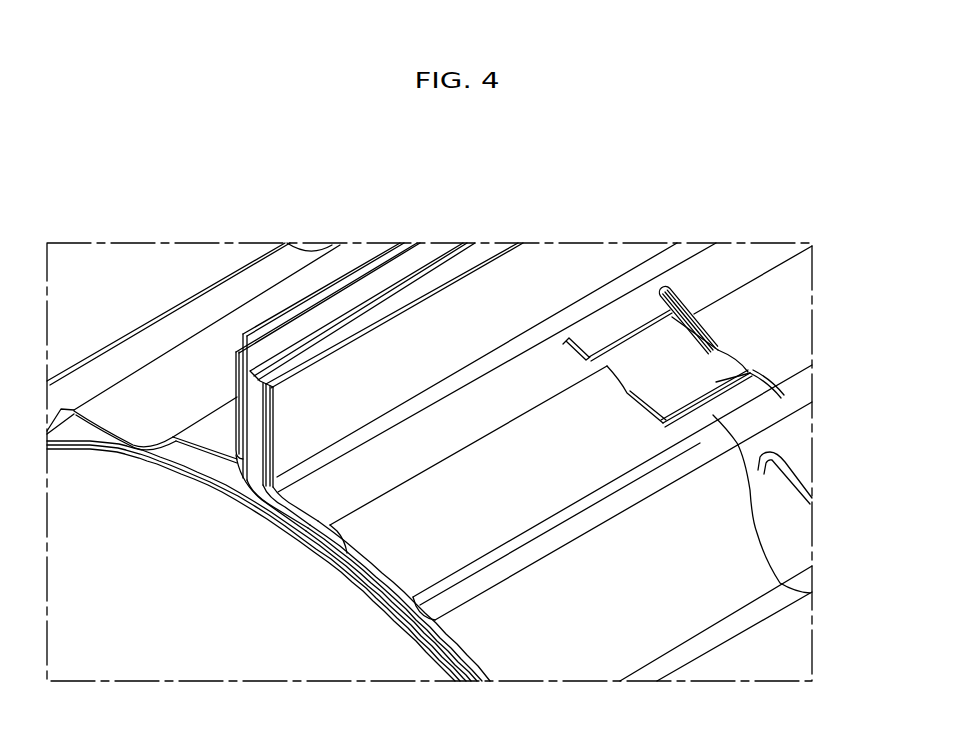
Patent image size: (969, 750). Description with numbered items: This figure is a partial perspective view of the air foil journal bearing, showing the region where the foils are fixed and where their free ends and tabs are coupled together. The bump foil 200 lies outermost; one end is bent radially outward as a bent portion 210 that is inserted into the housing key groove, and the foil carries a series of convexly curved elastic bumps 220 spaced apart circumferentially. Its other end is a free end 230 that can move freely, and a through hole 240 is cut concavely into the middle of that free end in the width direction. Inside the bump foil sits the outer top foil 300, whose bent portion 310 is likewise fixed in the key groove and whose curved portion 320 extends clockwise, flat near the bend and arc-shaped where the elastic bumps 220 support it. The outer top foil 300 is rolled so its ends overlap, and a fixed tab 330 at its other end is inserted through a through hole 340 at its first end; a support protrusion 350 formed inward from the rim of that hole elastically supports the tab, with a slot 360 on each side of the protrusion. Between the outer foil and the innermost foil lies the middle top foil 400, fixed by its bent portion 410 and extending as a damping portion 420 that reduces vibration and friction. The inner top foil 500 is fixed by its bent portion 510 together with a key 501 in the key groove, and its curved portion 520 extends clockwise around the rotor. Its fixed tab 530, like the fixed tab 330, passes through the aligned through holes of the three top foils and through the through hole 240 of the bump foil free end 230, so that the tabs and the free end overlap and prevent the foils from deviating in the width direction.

The bump foil 200 is at (233, 375).
The bent portion 210 is at (211, 307).
The elastic bumps 220 is at (132, 415).
The free end 230 is at (503, 480).
The through hole 240 is at (787, 583).
The outer top foil 300 is at (380, 332).
The bent portion 310 is at (467, 332).
The curved portion 320 is at (443, 663).
The fixed tab 330 is at (726, 381).
The through hole 340 is at (660, 290).
The support protrusion 350 is at (617, 330).
The slot 360 is at (577, 340).
The middle top foil 400 is at (300, 376).
The bent portion 410 is at (358, 337).
The damping portion 420 is at (418, 640).
The inner top foil 500 is at (283, 363).
The key 501 is at (288, 360).
The bent portion 510 is at (328, 340).
The curved portion 520 is at (415, 640).
The fixed tab 530 is at (790, 462).